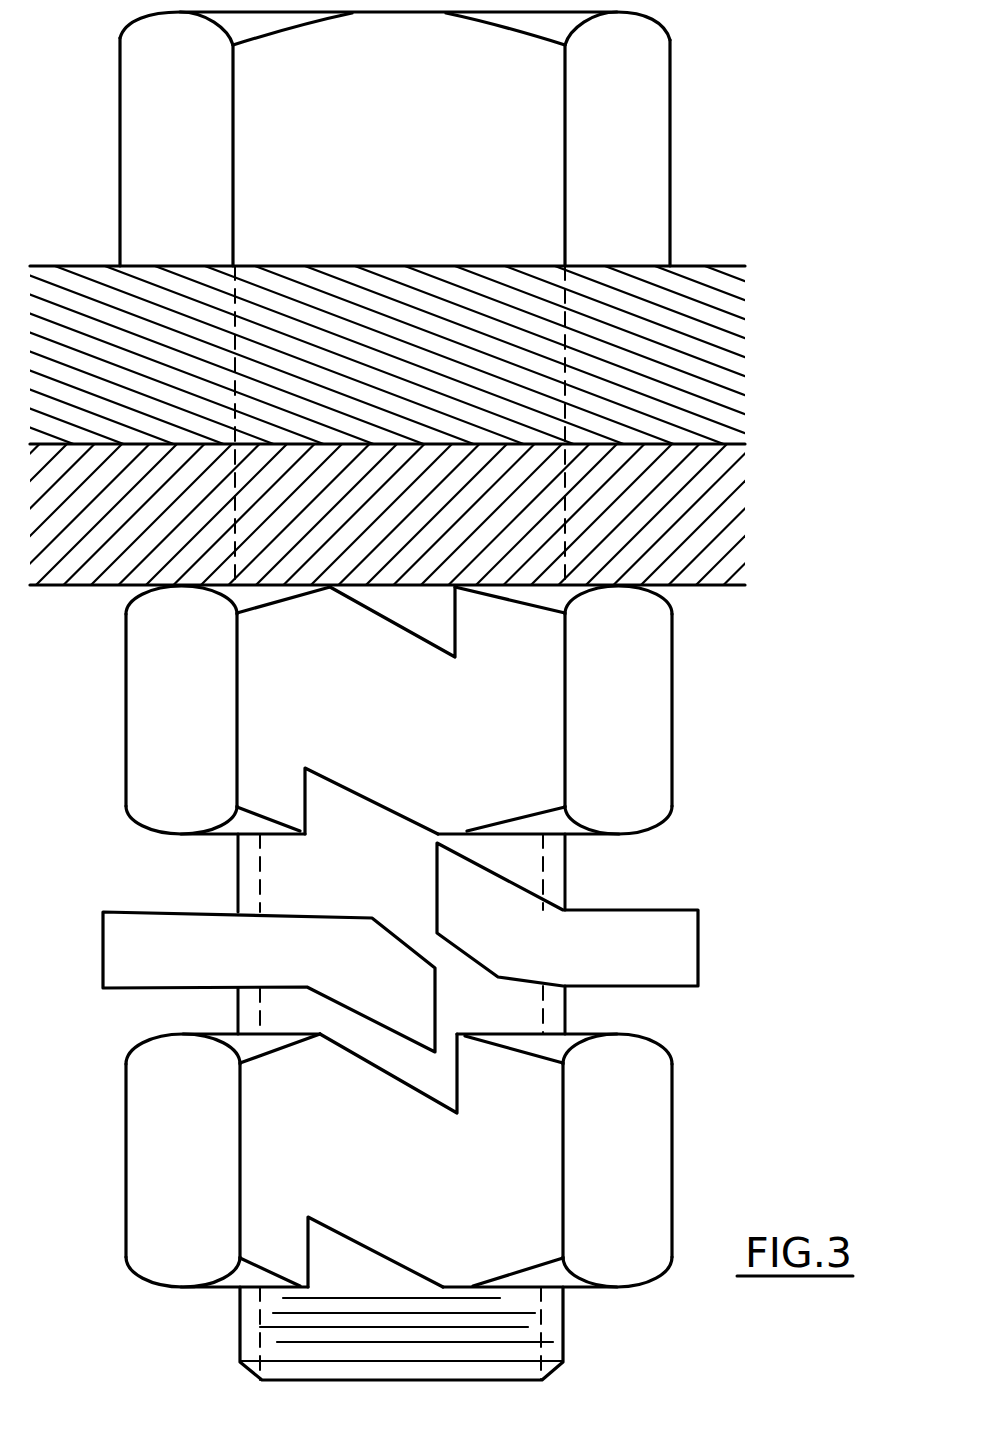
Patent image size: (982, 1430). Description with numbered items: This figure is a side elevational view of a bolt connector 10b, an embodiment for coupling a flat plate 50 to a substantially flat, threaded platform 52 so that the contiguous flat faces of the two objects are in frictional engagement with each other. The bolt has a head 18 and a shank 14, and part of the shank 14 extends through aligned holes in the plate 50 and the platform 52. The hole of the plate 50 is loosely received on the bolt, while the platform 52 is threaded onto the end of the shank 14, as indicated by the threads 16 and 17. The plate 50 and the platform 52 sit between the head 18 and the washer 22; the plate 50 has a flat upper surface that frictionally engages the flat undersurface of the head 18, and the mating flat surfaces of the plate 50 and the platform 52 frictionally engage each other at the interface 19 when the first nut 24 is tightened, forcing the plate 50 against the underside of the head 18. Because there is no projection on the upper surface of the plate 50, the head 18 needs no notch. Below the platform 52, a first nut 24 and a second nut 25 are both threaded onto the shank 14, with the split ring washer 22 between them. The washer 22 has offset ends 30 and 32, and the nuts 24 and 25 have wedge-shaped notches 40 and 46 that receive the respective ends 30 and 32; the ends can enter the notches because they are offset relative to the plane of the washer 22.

The bolt connector 10b is at (705, 216).
The shank 14 is at (567, 901).
The threads 16 is at (505, 1360).
The threads 17 is at (565, 488).
The head 18 is at (672, 181).
The interface 19 is at (745, 443).
The washer 22 is at (700, 962).
The first nut 24 is at (672, 746).
The second nut 25 is at (673, 1203).
The offset end of washer 30 is at (432, 905).
The offset end of washer 32 is at (437, 1034).
The wedge-shaped notch 40 is at (390, 625).
The wedge-shaped notch 46 is at (397, 1082).
The flat plate 50 is at (706, 264).
The threaded platform 52 is at (700, 586).